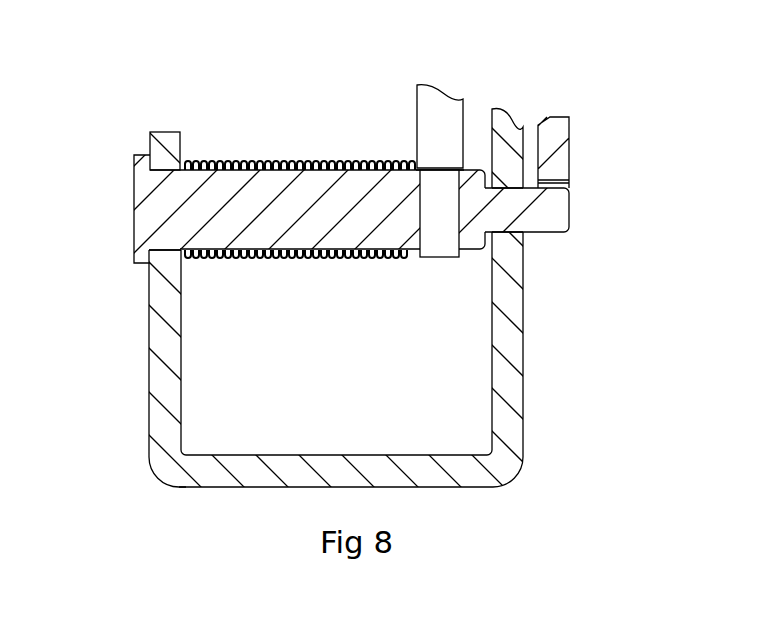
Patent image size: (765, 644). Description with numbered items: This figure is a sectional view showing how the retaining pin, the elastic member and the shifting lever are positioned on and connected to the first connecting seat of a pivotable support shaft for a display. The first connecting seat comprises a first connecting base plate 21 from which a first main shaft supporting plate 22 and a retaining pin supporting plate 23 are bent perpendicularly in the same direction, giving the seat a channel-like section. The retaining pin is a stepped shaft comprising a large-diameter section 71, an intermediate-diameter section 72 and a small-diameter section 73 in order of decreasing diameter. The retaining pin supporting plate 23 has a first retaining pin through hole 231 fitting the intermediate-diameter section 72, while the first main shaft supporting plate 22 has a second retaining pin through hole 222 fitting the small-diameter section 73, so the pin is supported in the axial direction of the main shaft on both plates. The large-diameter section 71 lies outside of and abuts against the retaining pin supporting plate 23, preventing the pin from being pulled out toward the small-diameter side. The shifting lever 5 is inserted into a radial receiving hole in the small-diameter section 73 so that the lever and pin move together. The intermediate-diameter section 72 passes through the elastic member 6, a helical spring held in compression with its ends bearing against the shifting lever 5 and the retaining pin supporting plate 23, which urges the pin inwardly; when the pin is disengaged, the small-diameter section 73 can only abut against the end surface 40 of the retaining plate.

The shifting lever 5 is at (438, 120).
The elastic member 6 is at (380, 162).
The first connecting base plate 21 is at (272, 462).
The first main shaft supporting plate 22 is at (513, 392).
The second retaining pin through hole 222 is at (520, 247).
The retaining pin supporting plate 23 is at (160, 373).
The first retaining pin through hole 231 is at (163, 251).
The end surface 40 is at (403, 253).
The large-diameter section 71 is at (145, 207).
The intermediate-diameter section 72 is at (260, 205).
The small-diameter section 73 is at (562, 208).